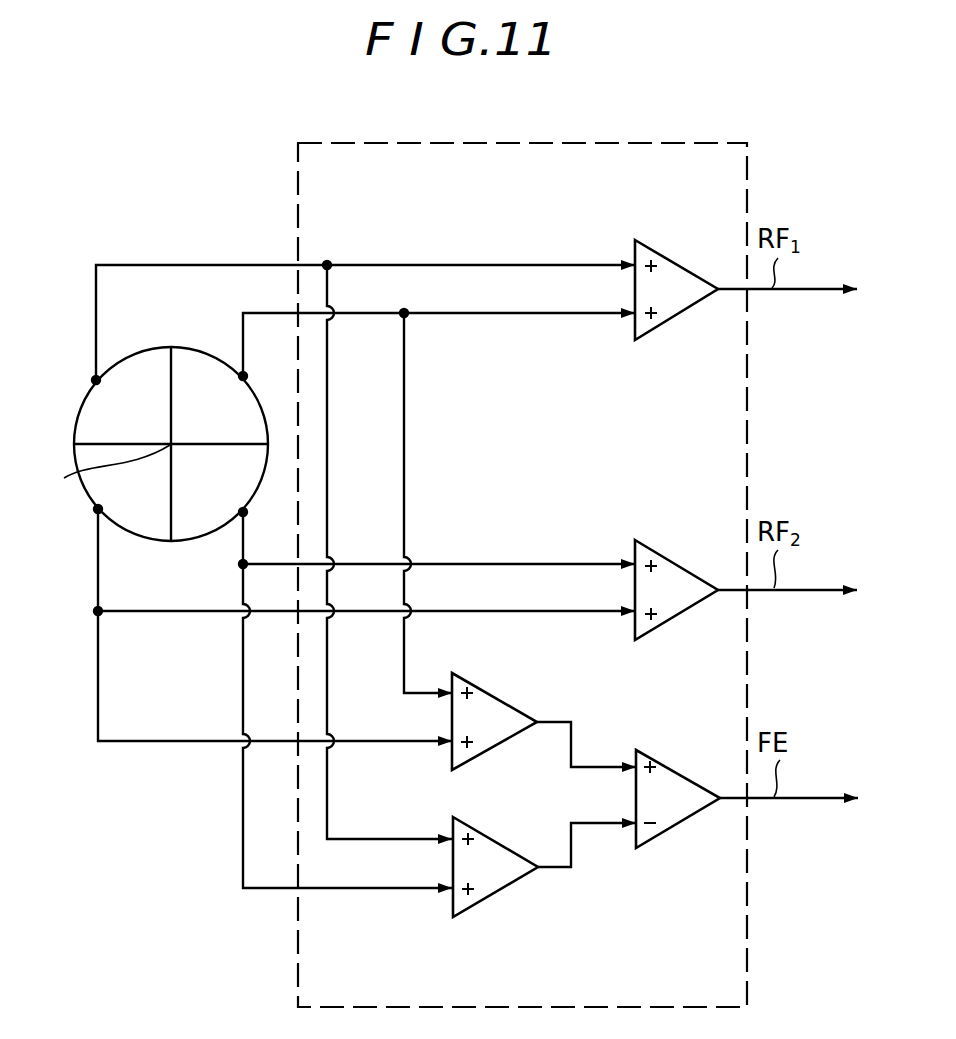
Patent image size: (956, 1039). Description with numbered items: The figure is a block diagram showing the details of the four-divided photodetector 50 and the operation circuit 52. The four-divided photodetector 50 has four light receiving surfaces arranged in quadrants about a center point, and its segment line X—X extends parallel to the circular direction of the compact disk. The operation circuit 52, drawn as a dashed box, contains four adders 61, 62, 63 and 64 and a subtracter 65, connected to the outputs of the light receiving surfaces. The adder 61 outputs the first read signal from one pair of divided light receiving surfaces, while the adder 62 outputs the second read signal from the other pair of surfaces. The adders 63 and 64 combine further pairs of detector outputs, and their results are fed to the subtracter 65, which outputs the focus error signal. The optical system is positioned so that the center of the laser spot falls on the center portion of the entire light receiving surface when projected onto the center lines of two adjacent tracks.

The four-divided photodetector 50 is at (80, 366).
The operation circuit 52 is at (297, 210).
The adder 61 is at (668, 258).
The adder 62 is at (664, 552).
The adder 63 is at (498, 695).
The adder 64 is at (497, 840).
The subtracter 65 is at (672, 768).